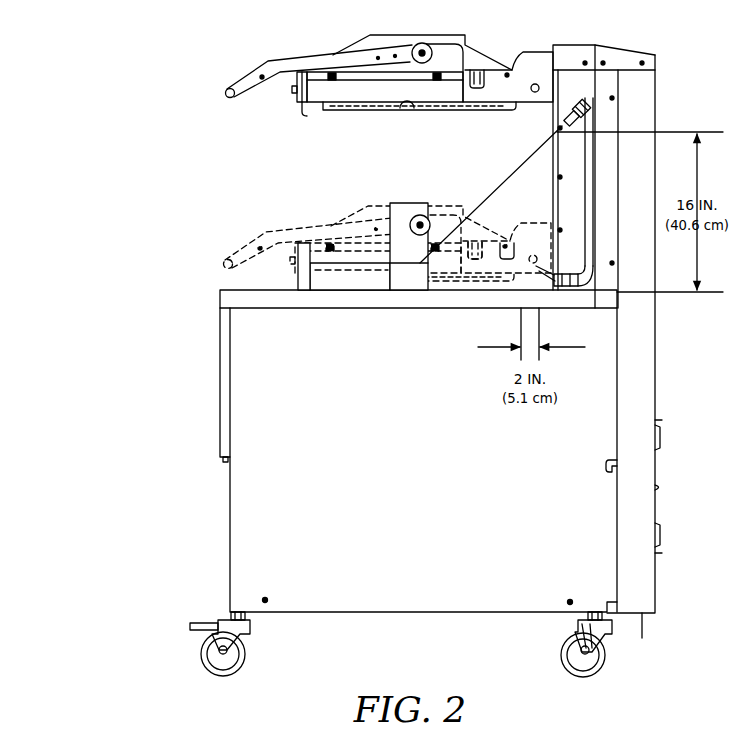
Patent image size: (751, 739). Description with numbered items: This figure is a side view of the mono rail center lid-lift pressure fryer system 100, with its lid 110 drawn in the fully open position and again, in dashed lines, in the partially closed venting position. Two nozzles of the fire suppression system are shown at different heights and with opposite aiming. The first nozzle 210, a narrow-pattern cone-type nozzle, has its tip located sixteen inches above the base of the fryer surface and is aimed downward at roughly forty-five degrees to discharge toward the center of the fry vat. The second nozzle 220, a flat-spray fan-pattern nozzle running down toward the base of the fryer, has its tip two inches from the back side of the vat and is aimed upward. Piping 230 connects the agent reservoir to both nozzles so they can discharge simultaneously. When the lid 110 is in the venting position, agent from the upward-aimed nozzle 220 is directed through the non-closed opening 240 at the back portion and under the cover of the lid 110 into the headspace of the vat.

The rotary tool assembly system 100 is at (166, 60).
The lid 110 is at (487, 52).
The first nozzle 210 is at (566, 128).
The second nozzle 220 is at (557, 279).
The piping 230 is at (593, 197).
The opening 240 is at (497, 259).